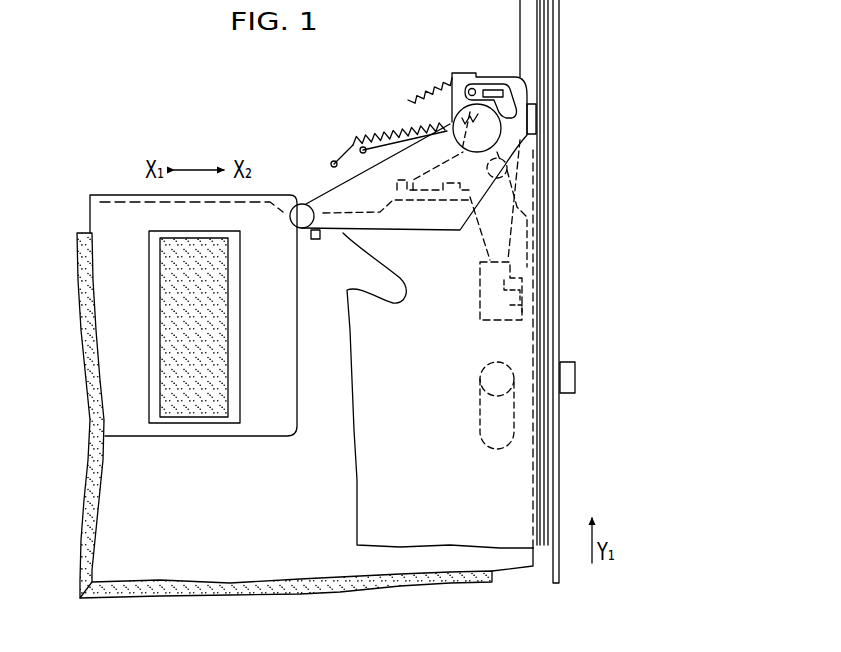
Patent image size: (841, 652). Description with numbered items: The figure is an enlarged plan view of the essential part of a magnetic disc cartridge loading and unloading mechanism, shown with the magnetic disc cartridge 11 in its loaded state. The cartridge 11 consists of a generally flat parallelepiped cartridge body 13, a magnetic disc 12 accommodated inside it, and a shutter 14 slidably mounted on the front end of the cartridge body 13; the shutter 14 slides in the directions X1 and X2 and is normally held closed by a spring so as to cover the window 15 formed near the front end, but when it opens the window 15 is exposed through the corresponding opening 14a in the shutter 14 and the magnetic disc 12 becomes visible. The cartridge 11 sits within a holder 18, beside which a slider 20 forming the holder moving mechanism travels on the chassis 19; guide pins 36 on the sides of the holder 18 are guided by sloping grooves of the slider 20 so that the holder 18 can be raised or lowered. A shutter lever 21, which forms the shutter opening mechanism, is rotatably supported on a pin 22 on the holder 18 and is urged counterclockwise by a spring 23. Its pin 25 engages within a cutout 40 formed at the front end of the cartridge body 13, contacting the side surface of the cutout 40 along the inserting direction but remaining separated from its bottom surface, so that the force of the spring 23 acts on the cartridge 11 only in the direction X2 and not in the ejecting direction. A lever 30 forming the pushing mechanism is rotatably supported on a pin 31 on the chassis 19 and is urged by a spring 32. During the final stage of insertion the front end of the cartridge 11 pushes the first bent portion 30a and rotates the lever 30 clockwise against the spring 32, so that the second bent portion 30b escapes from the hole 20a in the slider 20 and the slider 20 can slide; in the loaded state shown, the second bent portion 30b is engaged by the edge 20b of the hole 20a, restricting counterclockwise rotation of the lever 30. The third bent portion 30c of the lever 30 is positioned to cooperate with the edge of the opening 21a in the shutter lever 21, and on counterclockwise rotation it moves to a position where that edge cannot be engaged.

The magnetic disc cartridge 11 is at (508, 578).
The magnetic disc 12 is at (82, 305).
The cartridge body 13 is at (110, 488).
The shutter 14 is at (112, 205).
The opening in shutter 14a is at (150, 344).
The window 15 is at (165, 307).
The holder 18 is at (357, 465).
The chassis 19 is at (557, 190).
The slider 20 is at (535, 32).
The hole in slider 20a is at (540, 312).
The edge of hole 20b is at (540, 284).
The shutter lever 21 is at (418, 232).
The opening in shutter lever 21a is at (472, 88).
The pin 22 is at (500, 128).
The spring 23 is at (408, 99).
The pin 25 is at (302, 204).
The lever 30 is at (528, 175).
The first bent portion 30a is at (397, 190).
The second bent portion 30b is at (530, 262).
The third bent portion 30c is at (493, 90).
The pin 31 is at (487, 170).
The spring 32 is at (395, 120).
The guide pin 36 is at (575, 375).
The cutout 40 is at (320, 240).